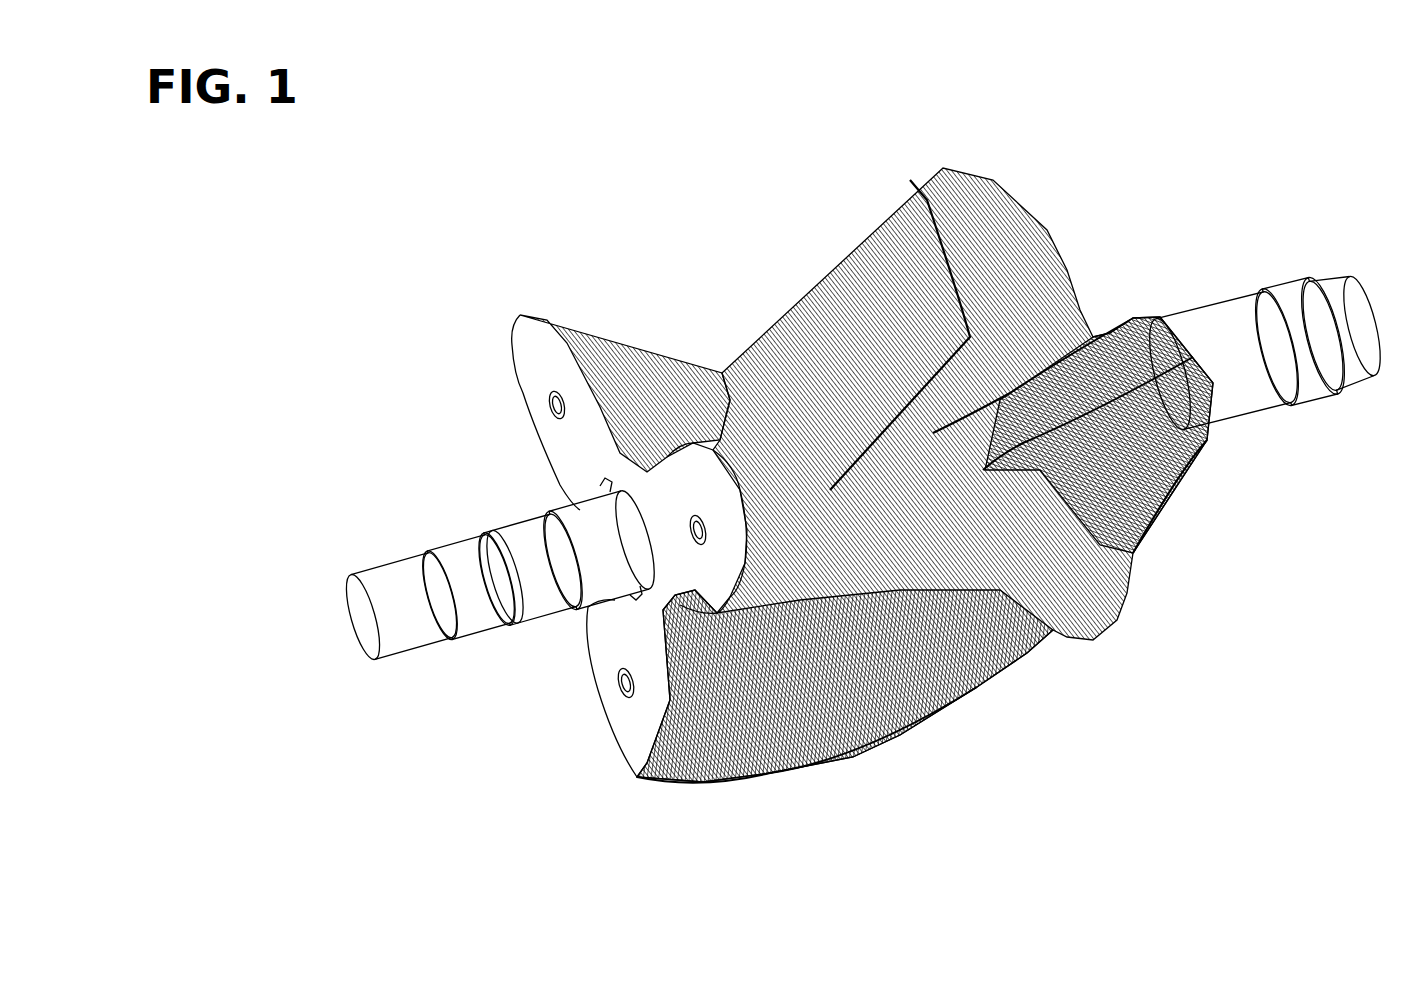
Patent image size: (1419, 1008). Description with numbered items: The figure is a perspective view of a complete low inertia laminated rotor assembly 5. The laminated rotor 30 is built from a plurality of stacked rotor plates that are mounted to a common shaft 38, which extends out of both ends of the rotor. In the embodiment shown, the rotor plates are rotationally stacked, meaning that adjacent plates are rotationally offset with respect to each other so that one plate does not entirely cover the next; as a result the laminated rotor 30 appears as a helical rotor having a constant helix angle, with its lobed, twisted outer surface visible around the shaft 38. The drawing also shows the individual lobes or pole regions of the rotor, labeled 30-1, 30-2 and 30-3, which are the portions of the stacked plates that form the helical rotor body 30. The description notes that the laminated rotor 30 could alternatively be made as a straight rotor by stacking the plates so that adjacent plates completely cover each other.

The laminated rotor assembly 5 is at (333, 405).
The laminated rotor 30 is at (763, 287).
The first pole portion 30-1 is at (524, 315).
The second pole end plate 30-2 is at (602, 727).
The third pole portion 30-3 is at (777, 778).
The shaft 38 is at (363, 615).